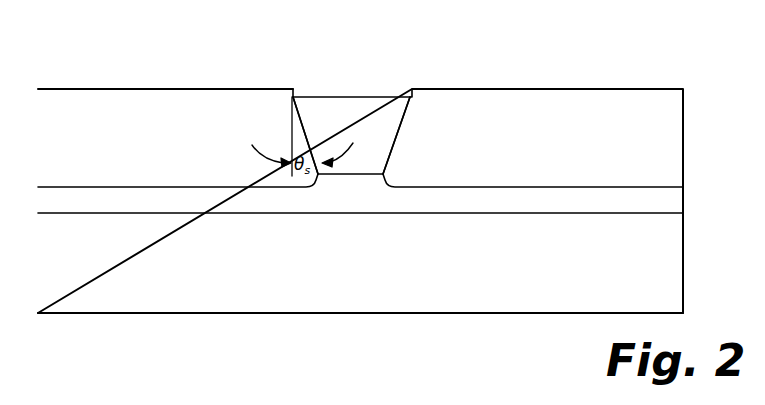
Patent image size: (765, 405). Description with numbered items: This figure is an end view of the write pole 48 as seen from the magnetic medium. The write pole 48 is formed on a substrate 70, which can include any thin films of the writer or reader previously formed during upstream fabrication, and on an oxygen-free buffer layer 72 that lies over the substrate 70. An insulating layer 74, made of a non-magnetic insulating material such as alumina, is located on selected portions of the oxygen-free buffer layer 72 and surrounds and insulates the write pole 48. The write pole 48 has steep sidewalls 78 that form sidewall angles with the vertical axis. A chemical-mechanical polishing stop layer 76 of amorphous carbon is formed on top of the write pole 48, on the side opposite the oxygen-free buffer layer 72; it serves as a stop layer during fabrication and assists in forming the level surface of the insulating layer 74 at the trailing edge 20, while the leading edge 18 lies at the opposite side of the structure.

The trailing edge 20 is at (162, 77).
The insulating layer 74 is at (198, 97).
The chemical-mechanical polishing (CMP) stop layer 76 is at (353, 90).
The write pole 48 is at (383, 120).
The sidewalls 78 is at (294, 107).
The oxygen-free buffer layer 72 is at (673, 203).
The substrate 70 is at (632, 265).
The leading edge 18 is at (338, 323).